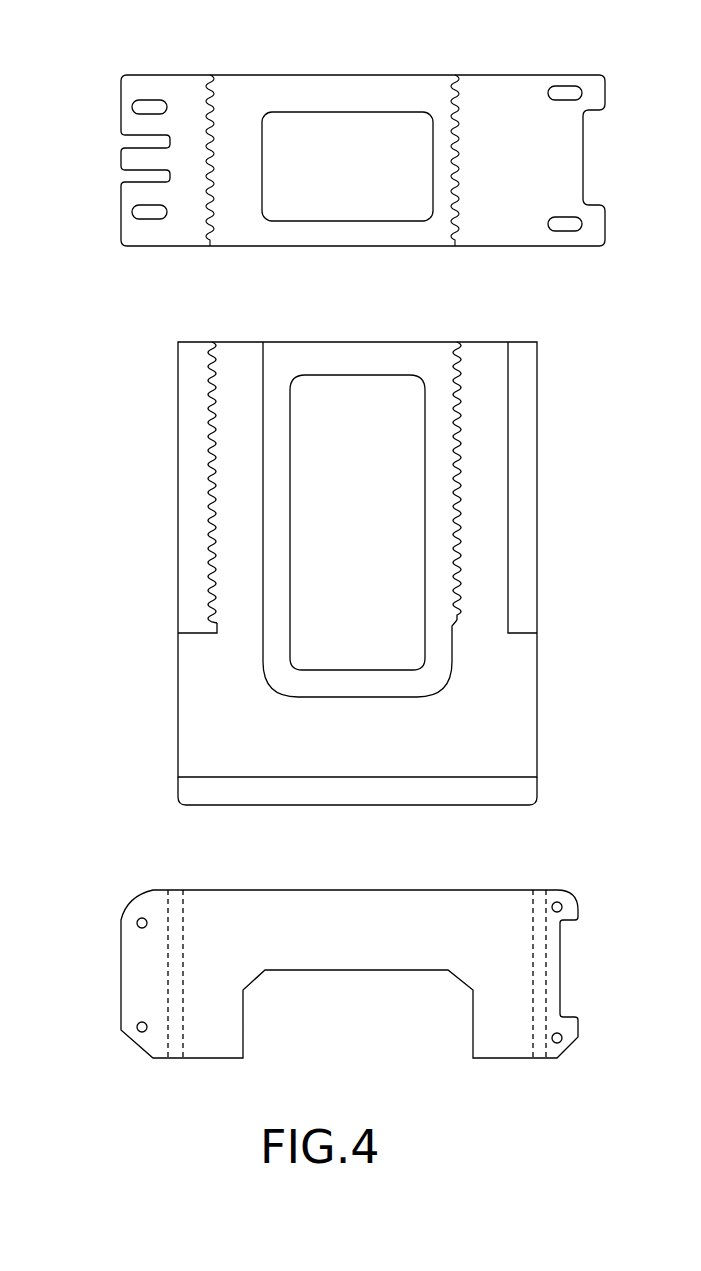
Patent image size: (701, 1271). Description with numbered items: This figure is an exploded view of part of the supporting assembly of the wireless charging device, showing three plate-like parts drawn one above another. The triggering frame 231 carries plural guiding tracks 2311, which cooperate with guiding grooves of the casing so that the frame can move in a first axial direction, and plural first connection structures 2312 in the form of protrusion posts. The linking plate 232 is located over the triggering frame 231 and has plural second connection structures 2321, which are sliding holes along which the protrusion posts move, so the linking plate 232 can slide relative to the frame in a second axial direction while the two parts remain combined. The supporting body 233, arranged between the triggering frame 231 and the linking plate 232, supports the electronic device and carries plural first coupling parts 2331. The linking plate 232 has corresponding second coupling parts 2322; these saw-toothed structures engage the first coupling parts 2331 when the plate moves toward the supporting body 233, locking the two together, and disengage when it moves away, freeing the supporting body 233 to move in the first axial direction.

The triggering frame 231 is at (430, 878).
The guiding tracks 2311 is at (540, 960).
The first connection structures 2312 is at (140, 918).
The linking plate 232 is at (378, 57).
The second connection structures 2321 is at (146, 103).
The second coupling parts 2322 is at (210, 90).
The supporting body 233 is at (400, 325).
The first coupling parts 2331 is at (212, 345).